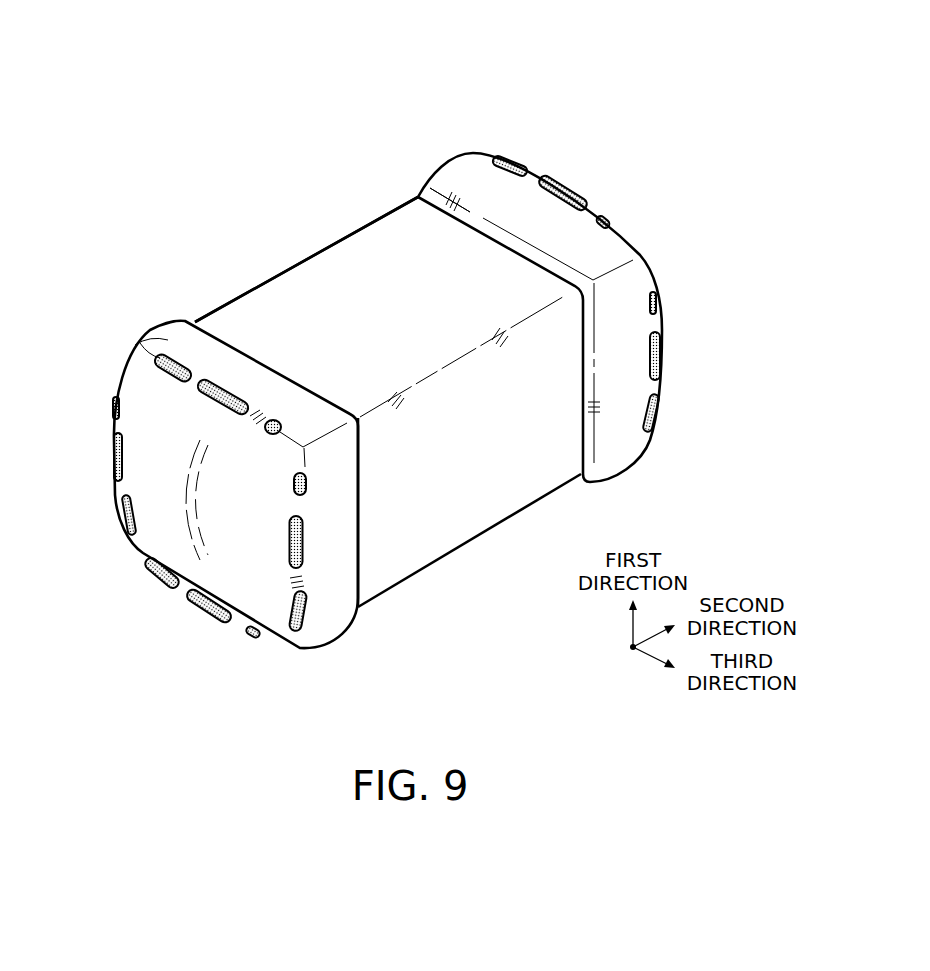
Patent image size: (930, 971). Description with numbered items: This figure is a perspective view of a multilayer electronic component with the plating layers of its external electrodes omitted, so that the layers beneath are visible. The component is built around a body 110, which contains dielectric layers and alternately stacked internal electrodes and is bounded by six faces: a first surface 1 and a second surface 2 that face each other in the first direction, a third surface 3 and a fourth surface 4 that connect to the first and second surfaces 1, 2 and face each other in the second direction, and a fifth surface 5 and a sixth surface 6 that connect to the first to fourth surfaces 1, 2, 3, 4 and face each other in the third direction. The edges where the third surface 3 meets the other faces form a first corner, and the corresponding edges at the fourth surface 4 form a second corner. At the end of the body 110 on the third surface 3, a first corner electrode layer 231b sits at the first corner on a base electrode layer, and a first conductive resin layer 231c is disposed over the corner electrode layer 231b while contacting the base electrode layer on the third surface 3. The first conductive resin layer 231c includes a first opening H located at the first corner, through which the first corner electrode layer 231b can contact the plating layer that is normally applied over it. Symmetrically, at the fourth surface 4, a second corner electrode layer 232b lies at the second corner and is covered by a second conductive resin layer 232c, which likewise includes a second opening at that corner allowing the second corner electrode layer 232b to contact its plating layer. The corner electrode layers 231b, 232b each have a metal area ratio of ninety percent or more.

The first surface 1 is at (442, 535).
The second surface 2 is at (393, 267).
The third surface 3 is at (201, 483).
The fourth surface 4 is at (548, 291).
The fifth surface 5 is at (348, 260).
The sixth surface 6 is at (468, 472).
The body 110 is at (386, 391).
The first corner electrode layer 231b is at (162, 362).
The first conductive resin layer 231c is at (181, 332).
The second corner electrode layer 232b is at (510, 162).
The second conductive resin layer 232c is at (447, 173).
The first opening H is at (300, 543).